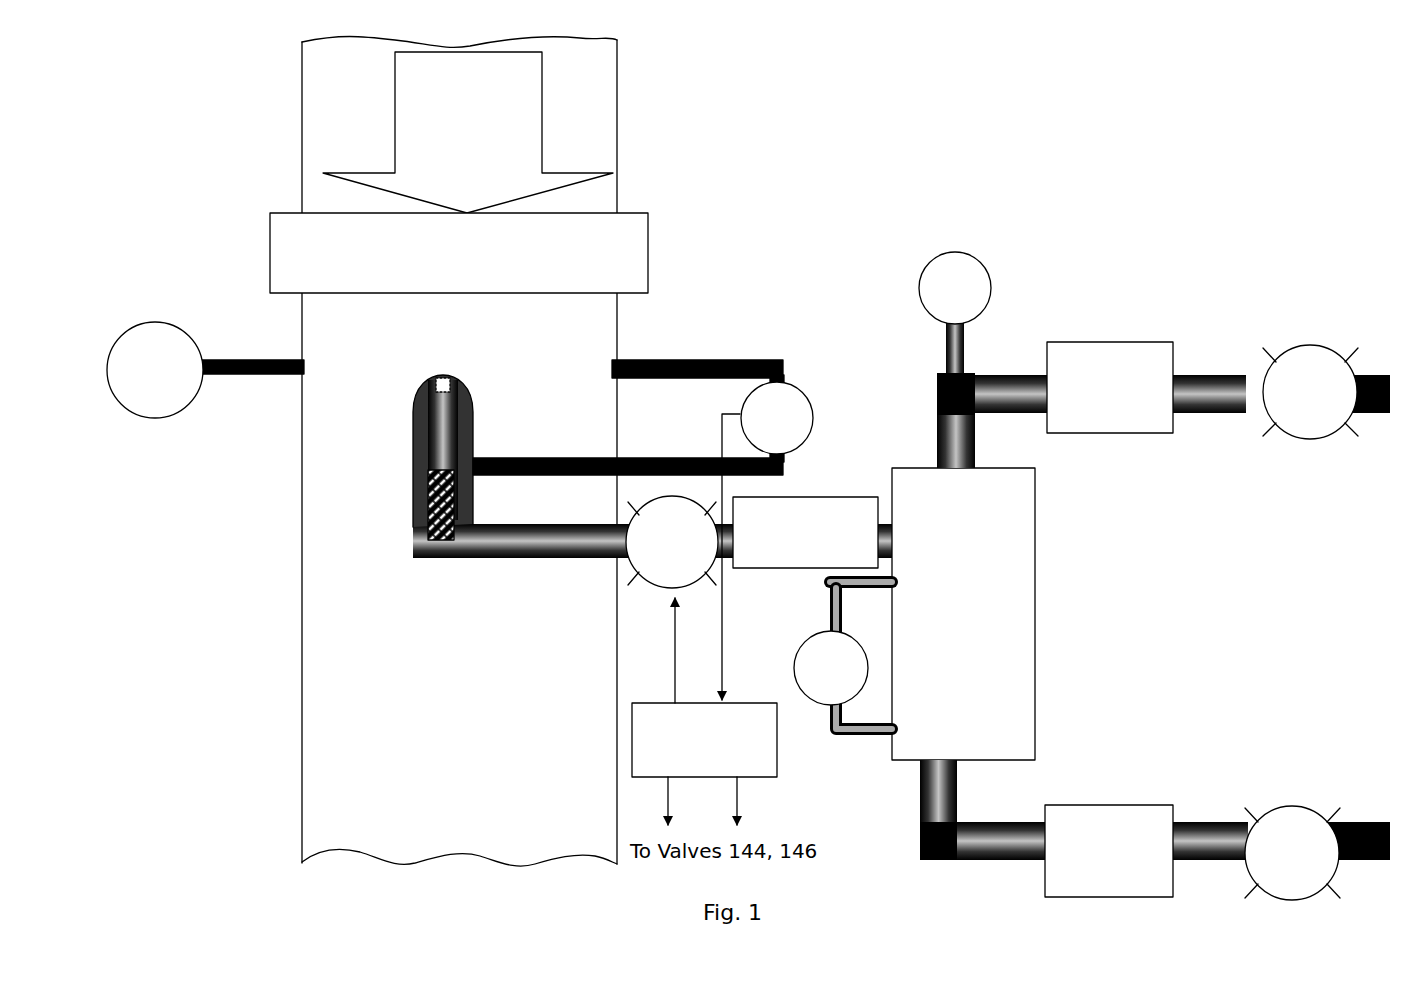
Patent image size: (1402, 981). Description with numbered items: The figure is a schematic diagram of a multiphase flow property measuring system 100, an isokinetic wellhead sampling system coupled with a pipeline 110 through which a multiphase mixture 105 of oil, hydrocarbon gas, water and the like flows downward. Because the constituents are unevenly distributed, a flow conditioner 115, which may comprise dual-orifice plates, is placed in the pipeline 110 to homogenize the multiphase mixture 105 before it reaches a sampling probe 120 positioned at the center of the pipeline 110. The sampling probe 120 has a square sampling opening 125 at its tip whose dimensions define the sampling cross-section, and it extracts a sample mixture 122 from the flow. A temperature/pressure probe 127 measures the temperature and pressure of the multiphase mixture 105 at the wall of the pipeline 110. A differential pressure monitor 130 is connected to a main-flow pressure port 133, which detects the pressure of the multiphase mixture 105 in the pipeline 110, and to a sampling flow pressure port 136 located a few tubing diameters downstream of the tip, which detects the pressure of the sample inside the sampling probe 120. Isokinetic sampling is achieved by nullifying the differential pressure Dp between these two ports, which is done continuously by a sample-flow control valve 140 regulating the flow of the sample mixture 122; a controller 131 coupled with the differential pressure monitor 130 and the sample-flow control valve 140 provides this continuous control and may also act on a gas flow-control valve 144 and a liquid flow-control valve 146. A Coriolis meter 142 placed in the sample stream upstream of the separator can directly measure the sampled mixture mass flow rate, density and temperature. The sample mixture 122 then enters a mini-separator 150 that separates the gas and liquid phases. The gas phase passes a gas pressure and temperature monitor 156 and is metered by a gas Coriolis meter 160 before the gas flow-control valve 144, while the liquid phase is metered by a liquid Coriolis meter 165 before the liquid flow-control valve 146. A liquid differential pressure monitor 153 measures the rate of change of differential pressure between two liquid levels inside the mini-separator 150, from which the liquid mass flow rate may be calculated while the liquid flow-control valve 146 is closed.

The multiphase flow property measuring system 100 is at (858, 124).
The multiphase mixture 105 is at (542, 55).
The pipeline 110 is at (302, 92).
The flow conditioner 115 is at (648, 213).
The sampling probe 120 is at (413, 470).
The sample mixture 122 is at (413, 497).
The sampling opening 125 is at (436, 380).
The temperature/pressure probe 127 is at (150, 322).
The differential pressure monitor 130 is at (800, 392).
The controller 131 is at (632, 757).
The main-flow pressure port 133 is at (612, 362).
The sampling flow pressure port 136 is at (473, 460).
The sample-flow control valve 140 is at (662, 590).
The Coriolis meter 142 is at (790, 568).
The gas flow-control valve 144 is at (1305, 345).
The liquid flow-control valve 146 is at (1282, 806).
The mini-separator 150 is at (1035, 630).
The liquid differential pressure monitor 153 is at (836, 705).
The gas pressure and temperature monitor 156 is at (938, 252).
The gas Coriolis meter 160 is at (1092, 342).
The liquid Coriolis meter 165 is at (1092, 805).